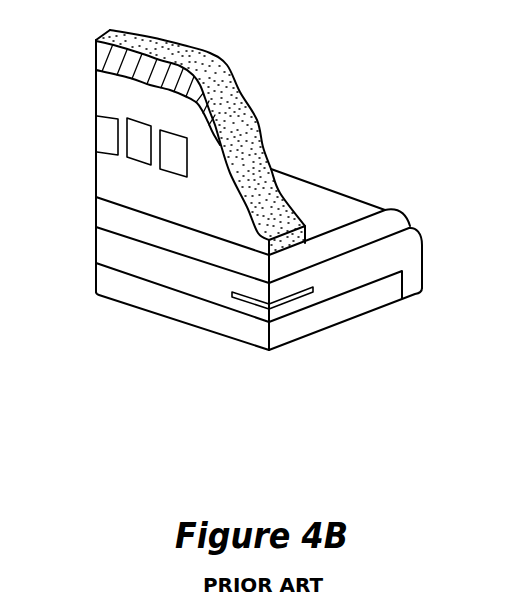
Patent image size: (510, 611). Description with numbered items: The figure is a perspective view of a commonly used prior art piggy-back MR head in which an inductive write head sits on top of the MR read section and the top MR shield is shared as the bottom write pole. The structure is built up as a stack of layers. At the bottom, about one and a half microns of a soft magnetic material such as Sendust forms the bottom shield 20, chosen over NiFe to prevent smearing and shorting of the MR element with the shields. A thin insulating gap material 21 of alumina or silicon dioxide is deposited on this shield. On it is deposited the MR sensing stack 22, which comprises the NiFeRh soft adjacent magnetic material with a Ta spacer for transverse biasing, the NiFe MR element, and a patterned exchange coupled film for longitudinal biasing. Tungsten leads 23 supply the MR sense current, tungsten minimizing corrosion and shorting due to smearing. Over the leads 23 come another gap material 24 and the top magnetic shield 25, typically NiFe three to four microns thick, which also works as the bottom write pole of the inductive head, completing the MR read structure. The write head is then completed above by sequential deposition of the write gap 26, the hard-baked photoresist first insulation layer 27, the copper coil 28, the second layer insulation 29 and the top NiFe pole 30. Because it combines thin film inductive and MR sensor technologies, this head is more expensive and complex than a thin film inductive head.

The bottom shield 20 is at (252, 338).
The insulating gap material 21 is at (238, 298).
The MR element stack 22 is at (293, 300).
The tungsten leads 23 is at (358, 278).
The gap material 24 is at (110, 256).
The top magnetic shield 25 is at (108, 220).
The write gap 26 is at (338, 210).
The first insulation layer 27 is at (96, 175).
The copper coil 28 is at (106, 132).
The second layer insulation 29 is at (98, 91).
The top NiFe pole 30 is at (99, 54).